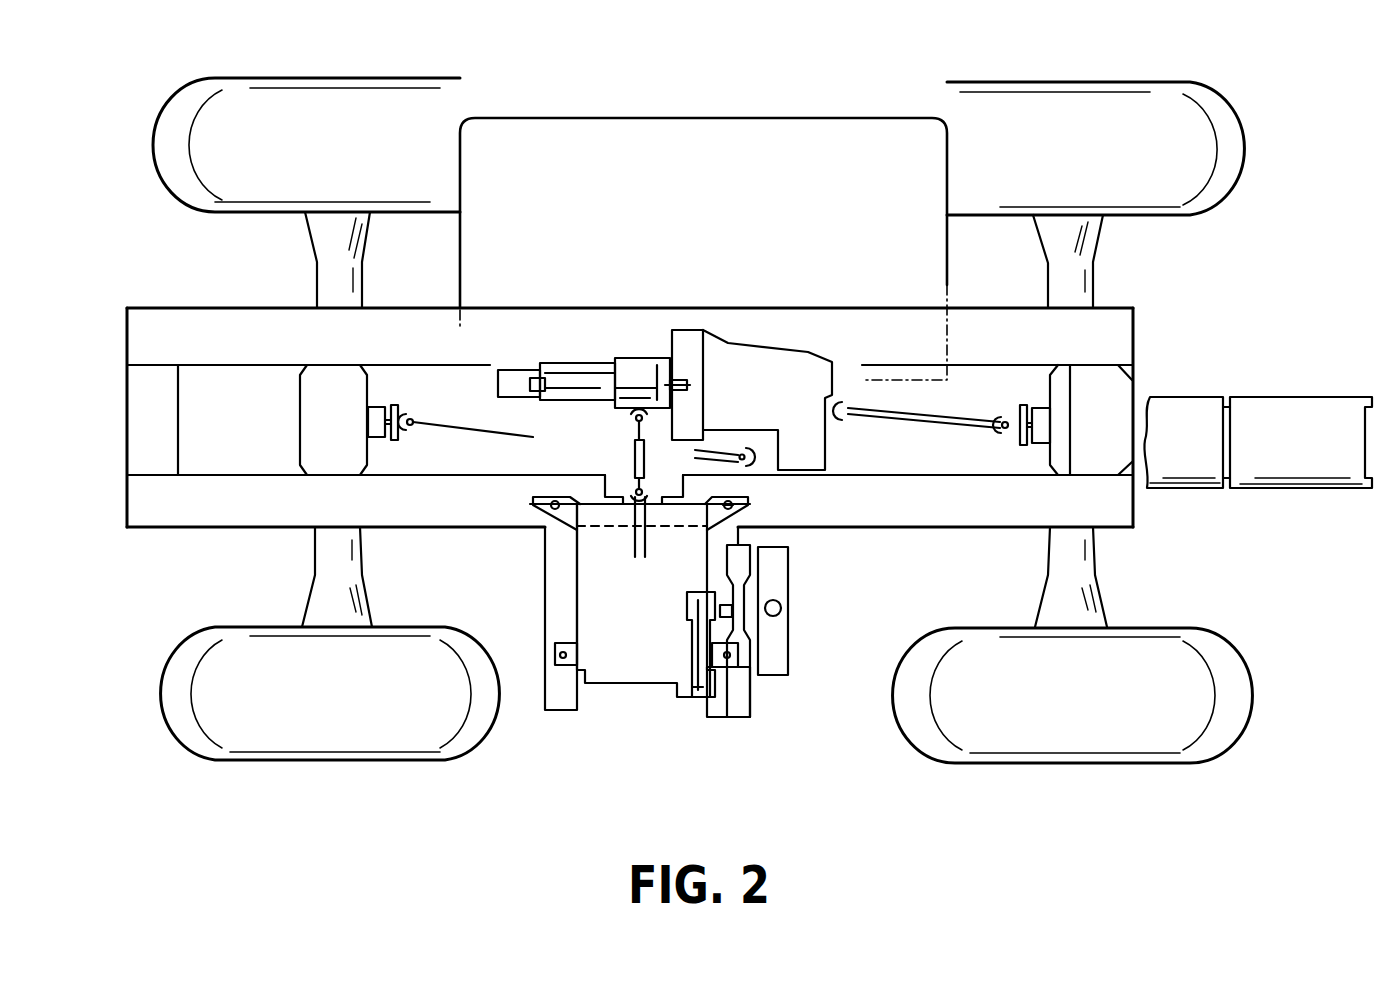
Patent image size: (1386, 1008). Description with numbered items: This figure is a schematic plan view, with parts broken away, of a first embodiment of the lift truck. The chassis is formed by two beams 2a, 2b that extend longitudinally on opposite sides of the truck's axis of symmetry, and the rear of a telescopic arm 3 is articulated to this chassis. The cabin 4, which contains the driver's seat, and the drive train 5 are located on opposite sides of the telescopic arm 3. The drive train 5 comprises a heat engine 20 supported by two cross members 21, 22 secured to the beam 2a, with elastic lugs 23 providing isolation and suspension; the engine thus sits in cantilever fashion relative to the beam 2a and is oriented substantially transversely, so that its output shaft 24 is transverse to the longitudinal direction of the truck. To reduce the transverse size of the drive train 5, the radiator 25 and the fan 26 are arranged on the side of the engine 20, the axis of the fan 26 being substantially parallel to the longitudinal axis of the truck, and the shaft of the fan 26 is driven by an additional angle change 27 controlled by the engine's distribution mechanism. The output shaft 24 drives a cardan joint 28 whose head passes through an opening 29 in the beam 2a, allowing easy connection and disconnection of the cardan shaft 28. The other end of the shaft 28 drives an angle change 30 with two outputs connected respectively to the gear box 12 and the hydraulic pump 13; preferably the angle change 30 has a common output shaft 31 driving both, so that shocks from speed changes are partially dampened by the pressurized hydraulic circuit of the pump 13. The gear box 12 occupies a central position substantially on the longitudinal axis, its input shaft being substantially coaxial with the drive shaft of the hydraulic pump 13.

The beam 2a is at (990, 550).
The beam 2b is at (992, 296).
The telescopic arm 3 is at (1179, 385).
The cabin 4 is at (771, 110).
The drive train 5 is at (644, 622).
The gear box 12 is at (817, 340).
The hydraulic pump 13 is at (515, 350).
The heat engine 20 is at (612, 630).
The cross member 21 is at (558, 705).
The cross member 22 is at (745, 704).
The elastic lugs 23 is at (553, 655).
The output shaft 24 is at (627, 530).
The radiator 25 is at (778, 655).
The fan 26 is at (745, 568).
The additional angle change 27 is at (676, 596).
The cardan joint 28 is at (625, 458).
The opening 29 is at (658, 475).
The angle change 30 is at (642, 345).
The common output shaft 31 is at (620, 372).